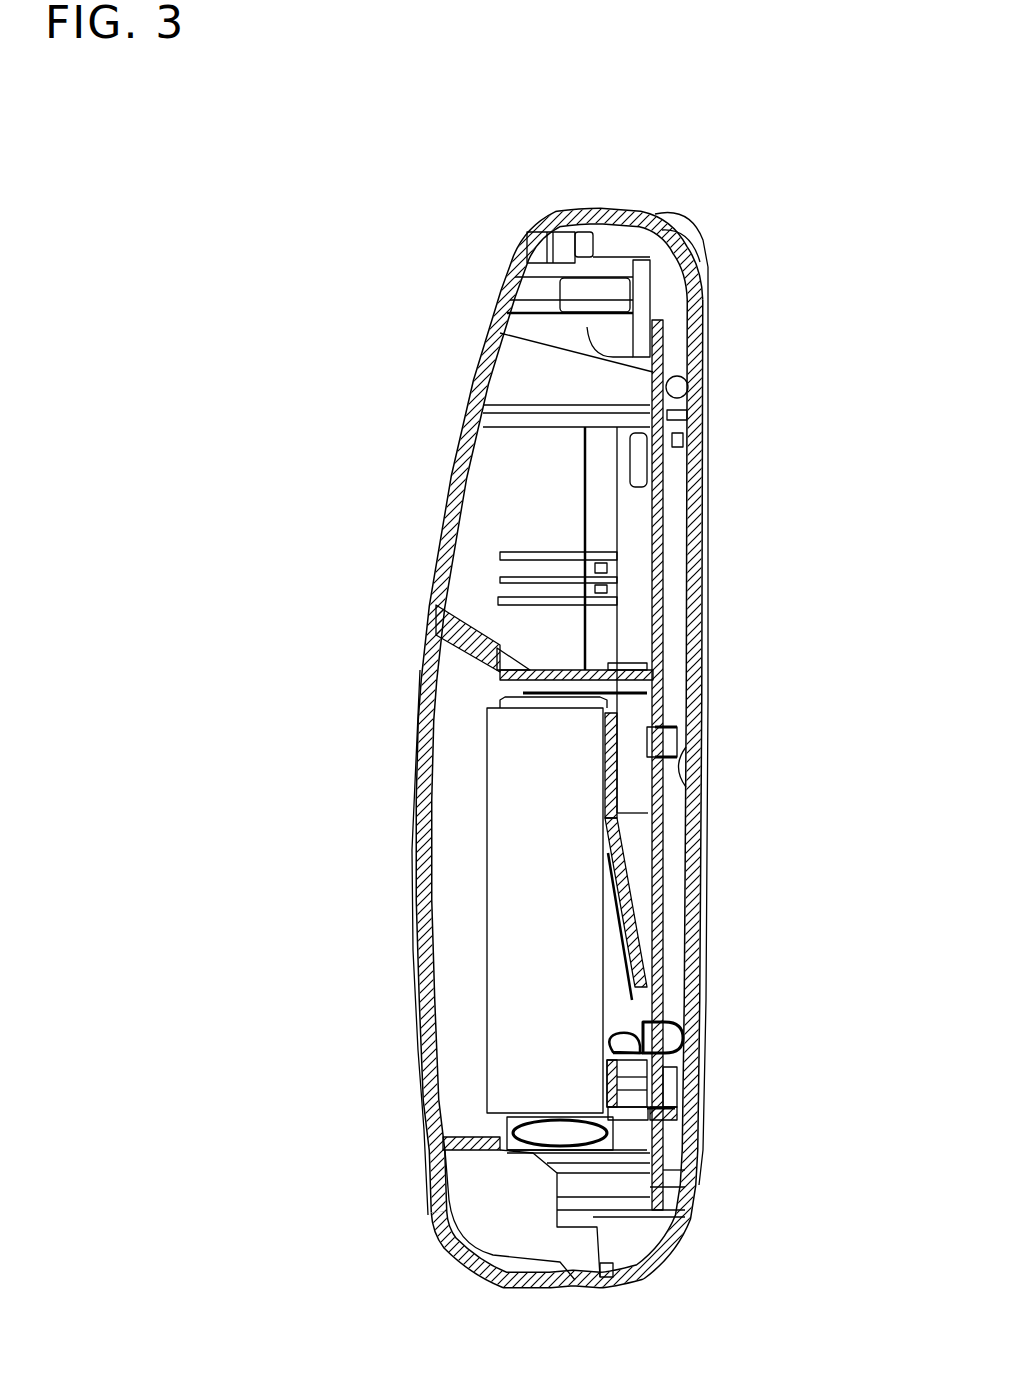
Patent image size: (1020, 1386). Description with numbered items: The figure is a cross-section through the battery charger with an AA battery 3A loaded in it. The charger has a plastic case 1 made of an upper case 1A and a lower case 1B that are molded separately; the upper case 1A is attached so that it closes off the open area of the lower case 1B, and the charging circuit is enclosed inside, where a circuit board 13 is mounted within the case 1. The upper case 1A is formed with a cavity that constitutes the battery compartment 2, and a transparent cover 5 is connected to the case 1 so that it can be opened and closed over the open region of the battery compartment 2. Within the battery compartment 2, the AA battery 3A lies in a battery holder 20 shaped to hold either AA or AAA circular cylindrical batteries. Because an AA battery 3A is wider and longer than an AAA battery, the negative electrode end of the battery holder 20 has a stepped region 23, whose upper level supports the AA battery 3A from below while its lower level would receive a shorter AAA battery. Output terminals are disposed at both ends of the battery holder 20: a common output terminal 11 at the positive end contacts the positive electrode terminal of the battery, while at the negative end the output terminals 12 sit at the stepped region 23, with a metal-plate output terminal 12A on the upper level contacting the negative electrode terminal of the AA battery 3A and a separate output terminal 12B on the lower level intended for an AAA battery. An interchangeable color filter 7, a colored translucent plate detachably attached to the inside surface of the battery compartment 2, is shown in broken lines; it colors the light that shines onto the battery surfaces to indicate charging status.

The case 1 is at (340, 353).
The upper case 1A is at (470, 372).
The lower case 1B is at (700, 472).
The battery compartment 2 is at (458, 720).
The AA battery 3A is at (500, 877).
The transparent cover 5 is at (427, 763).
The interchangeable color filter 7 is at (647, 1130).
The common output terminal 11 is at (552, 672).
The output terminal 12 is at (290, 927).
The output terminal 12A is at (552, 1113).
The output terminal 12B is at (600, 1043).
The circuit board 13 is at (666, 553).
The battery holder 20 is at (628, 944).
The stepped region 23 is at (650, 1105).